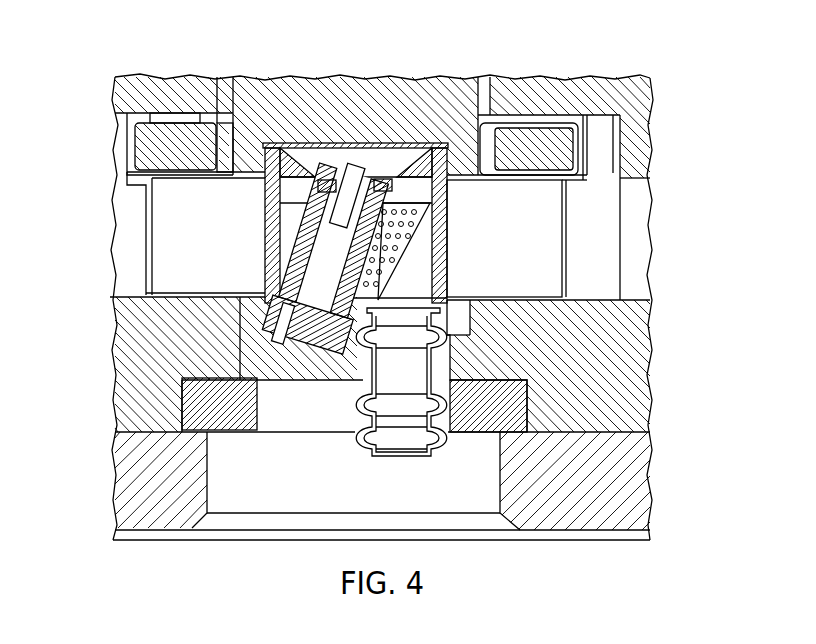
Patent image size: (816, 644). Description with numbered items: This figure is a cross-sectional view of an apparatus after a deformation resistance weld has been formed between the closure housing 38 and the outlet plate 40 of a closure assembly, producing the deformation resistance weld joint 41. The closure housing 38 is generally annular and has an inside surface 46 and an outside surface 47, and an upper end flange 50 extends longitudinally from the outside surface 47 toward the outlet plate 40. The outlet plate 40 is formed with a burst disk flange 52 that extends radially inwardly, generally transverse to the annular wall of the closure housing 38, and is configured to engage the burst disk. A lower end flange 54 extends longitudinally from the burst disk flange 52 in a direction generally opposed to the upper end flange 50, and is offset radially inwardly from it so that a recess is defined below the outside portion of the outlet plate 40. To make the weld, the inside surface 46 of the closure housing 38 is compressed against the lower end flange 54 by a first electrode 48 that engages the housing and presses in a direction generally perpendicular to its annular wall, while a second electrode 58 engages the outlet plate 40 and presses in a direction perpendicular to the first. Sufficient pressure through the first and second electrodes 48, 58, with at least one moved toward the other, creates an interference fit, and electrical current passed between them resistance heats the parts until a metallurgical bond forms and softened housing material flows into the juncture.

The outlet plate 40 is at (174, 107).
The second electrode 58 is at (426, 95).
The burst disk flange 52 is at (355, 159).
The lower end flange 54 is at (356, 119).
The upper end flange 50 is at (160, 144).
The deformation resistance weld joint 41 is at (159, 231).
The first electrode 48 is at (381, 236).
The closure housing 38 is at (162, 225).
The inside surface 46 is at (577, 238).
The outside surface 47 is at (573, 346).